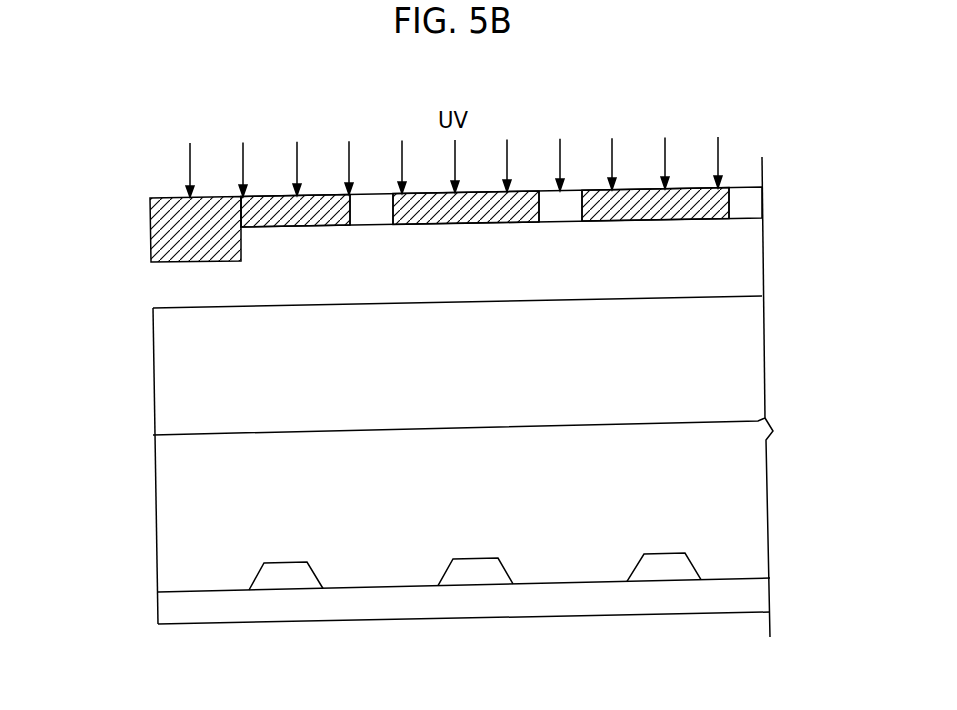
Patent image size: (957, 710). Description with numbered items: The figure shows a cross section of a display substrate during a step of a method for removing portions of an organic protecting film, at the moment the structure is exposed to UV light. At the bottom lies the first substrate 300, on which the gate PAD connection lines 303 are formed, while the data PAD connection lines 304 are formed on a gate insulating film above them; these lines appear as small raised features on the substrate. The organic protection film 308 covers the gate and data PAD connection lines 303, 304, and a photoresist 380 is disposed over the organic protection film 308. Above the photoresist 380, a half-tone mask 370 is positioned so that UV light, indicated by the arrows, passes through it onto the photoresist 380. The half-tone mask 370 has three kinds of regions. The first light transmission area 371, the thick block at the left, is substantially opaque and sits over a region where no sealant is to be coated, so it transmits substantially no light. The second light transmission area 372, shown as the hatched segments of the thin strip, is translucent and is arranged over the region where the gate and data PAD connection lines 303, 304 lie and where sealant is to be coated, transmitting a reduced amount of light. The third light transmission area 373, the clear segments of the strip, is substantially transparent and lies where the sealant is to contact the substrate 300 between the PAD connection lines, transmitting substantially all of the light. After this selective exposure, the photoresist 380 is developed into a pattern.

The half-tone mask 370 is at (442, 207).
The first light transmission area 371 is at (162, 214).
The second light transmission area 372 is at (700, 207).
The third light transmission area 373 is at (748, 202).
The photoresist 380 is at (753, 372).
The organic protection film 308 is at (758, 533).
The first substrate 300 is at (758, 595).
The gate PAD connection lines 303 is at (501, 610).
The data PAD connection lines 304 is at (665, 572).